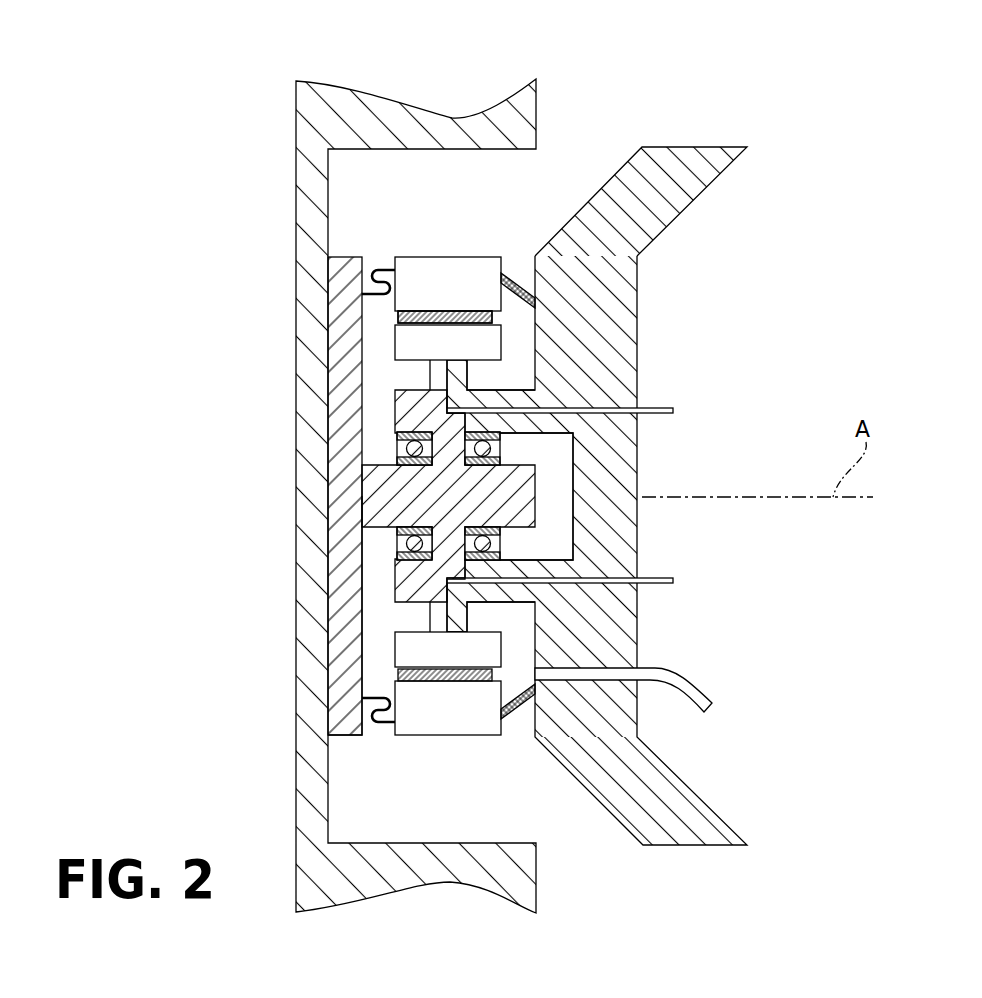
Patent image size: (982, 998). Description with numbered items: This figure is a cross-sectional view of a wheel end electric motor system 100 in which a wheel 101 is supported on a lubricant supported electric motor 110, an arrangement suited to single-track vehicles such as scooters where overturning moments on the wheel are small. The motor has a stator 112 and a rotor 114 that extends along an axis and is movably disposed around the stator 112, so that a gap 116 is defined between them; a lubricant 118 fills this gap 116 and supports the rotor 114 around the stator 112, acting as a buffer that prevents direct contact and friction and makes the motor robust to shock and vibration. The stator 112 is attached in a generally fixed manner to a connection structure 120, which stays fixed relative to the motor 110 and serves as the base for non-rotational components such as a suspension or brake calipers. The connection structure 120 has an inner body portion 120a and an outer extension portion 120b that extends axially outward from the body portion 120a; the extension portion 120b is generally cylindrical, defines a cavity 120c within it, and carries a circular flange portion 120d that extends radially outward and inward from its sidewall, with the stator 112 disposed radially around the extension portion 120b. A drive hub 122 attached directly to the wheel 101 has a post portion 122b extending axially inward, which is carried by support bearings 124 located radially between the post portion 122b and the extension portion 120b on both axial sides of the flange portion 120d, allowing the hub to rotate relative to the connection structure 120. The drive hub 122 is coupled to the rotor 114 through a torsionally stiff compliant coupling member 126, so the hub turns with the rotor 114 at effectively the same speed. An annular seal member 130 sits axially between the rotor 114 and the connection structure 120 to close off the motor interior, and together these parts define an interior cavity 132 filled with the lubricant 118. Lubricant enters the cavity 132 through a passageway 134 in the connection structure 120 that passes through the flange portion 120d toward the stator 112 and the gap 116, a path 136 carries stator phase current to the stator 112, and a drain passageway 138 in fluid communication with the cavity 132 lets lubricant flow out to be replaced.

The wheel end electric motor system 100 is at (798, 198).
The wheel 101 is at (372, 88).
The lubricant supported electric motor 110 is at (672, 513).
The stator 112 is at (495, 345).
The rotor 114 is at (483, 265).
The gap 116 is at (452, 316).
The lubricant 118 is at (397, 317).
The connection structure 120 is at (688, 822).
The inner body portion 120a is at (608, 330).
The outer extension portion 120b is at (490, 600).
The cavity 120c is at (553, 495).
The flange portion 120d is at (455, 458).
The drive hub 122 is at (343, 497).
The post portion 122b is at (423, 500).
The support bearings 124 is at (395, 453).
The compliant coupling member 126 is at (390, 268).
The seal member 130 is at (507, 278).
The interior cavity 132 is at (377, 670).
The passageway 134 is at (653, 407).
The path 136 is at (660, 585).
The drain passageway 138 is at (708, 697).